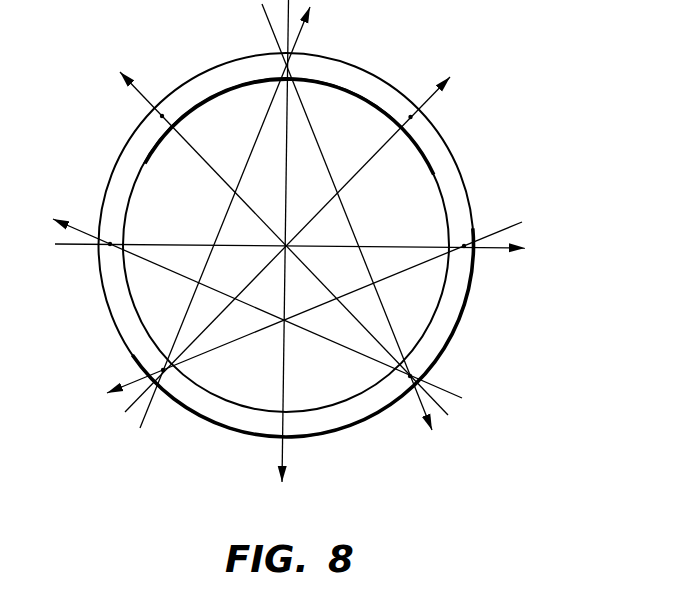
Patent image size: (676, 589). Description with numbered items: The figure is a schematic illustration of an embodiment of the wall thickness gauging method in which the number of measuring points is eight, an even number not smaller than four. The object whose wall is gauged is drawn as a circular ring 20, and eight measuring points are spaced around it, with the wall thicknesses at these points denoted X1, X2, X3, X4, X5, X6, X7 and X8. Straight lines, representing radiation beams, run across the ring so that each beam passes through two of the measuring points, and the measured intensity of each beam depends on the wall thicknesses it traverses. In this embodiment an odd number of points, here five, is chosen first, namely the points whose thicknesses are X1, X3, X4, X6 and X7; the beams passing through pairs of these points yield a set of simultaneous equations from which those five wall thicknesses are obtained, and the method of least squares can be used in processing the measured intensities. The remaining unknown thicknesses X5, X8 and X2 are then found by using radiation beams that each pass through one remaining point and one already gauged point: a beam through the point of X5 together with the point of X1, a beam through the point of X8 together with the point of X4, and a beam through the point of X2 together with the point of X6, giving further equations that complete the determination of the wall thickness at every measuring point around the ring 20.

The circular ring / track 20 is at (323, 409).
The wall thickness at first measuring point X1 is at (241, 217).
The wall thickness at second measuring point X2 is at (296, 244).
The wall thickness at third measuring point X3 is at (290, 266).
The wall thickness at fourth measuring point X4 is at (347, 223).
The wall thickness at fifth measuring point X5 is at (266, 241).
The wall thickness at sixth measuring point X6 is at (309, 307).
The wall thickness at seventh measuring point X7 is at (257, 295).
The wall thickness at eighth measuring point X8 is at (284, 239).